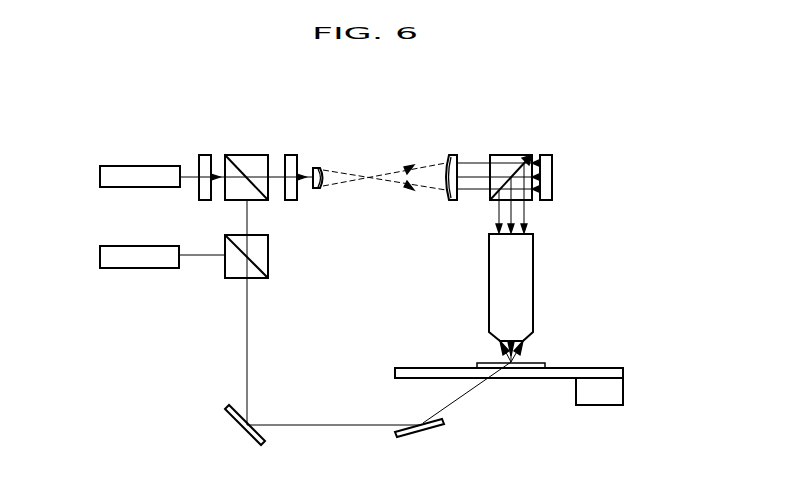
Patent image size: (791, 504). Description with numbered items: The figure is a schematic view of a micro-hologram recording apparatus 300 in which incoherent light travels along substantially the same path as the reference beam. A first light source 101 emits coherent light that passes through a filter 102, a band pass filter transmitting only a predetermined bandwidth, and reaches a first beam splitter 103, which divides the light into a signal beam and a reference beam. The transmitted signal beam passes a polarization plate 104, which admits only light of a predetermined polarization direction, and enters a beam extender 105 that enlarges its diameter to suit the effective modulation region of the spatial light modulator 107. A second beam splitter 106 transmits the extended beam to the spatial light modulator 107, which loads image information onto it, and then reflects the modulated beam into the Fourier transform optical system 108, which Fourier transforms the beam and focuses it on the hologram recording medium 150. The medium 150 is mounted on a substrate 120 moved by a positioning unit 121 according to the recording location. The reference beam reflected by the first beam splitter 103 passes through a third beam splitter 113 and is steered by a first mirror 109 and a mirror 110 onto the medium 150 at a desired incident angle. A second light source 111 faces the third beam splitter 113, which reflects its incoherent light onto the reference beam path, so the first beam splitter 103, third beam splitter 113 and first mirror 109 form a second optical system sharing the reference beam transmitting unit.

The first light source 101 is at (100, 177).
The filter 102 is at (202, 154).
The first beam splitter 103 is at (247, 154).
The polarization plate 104 is at (292, 154).
The beam extender 105 is at (453, 143).
The second beam splitter 106 is at (506, 154).
The spatial light modulator 107 is at (545, 154).
The Fourier transform optical system 108 is at (533, 281).
The first mirror 109 is at (243, 428).
The mirror 110 is at (420, 437).
The second light source 111 is at (100, 255).
The third beam splitter 113 is at (268, 255).
The substrate 120 is at (623, 374).
The positioning unit 121 is at (623, 397).
The hologram recording medium 150 is at (545, 363).
The micro-hologram recording apparatus 300 is at (163, 360).